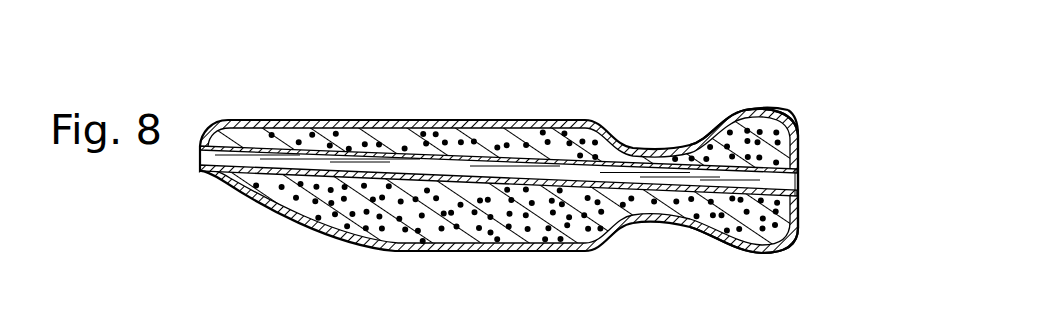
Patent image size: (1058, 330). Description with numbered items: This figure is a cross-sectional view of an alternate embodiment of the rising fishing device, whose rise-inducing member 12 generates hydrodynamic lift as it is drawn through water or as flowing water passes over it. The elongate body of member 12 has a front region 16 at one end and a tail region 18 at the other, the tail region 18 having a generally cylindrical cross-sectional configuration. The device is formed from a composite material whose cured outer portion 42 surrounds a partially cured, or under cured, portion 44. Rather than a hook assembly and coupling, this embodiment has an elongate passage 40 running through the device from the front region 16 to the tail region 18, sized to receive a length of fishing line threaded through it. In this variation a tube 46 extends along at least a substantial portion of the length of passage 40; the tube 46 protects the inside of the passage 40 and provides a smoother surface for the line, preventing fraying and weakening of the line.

The rise-inducing member 12 is at (526, 157).
The front region 16 is at (214, 124).
The tail region 18 is at (728, 122).
The elongate passage 40 is at (801, 192).
The cured outer portion 42 is at (766, 117).
The partially cured portion 44 is at (798, 134).
The tube 46 is at (772, 180).